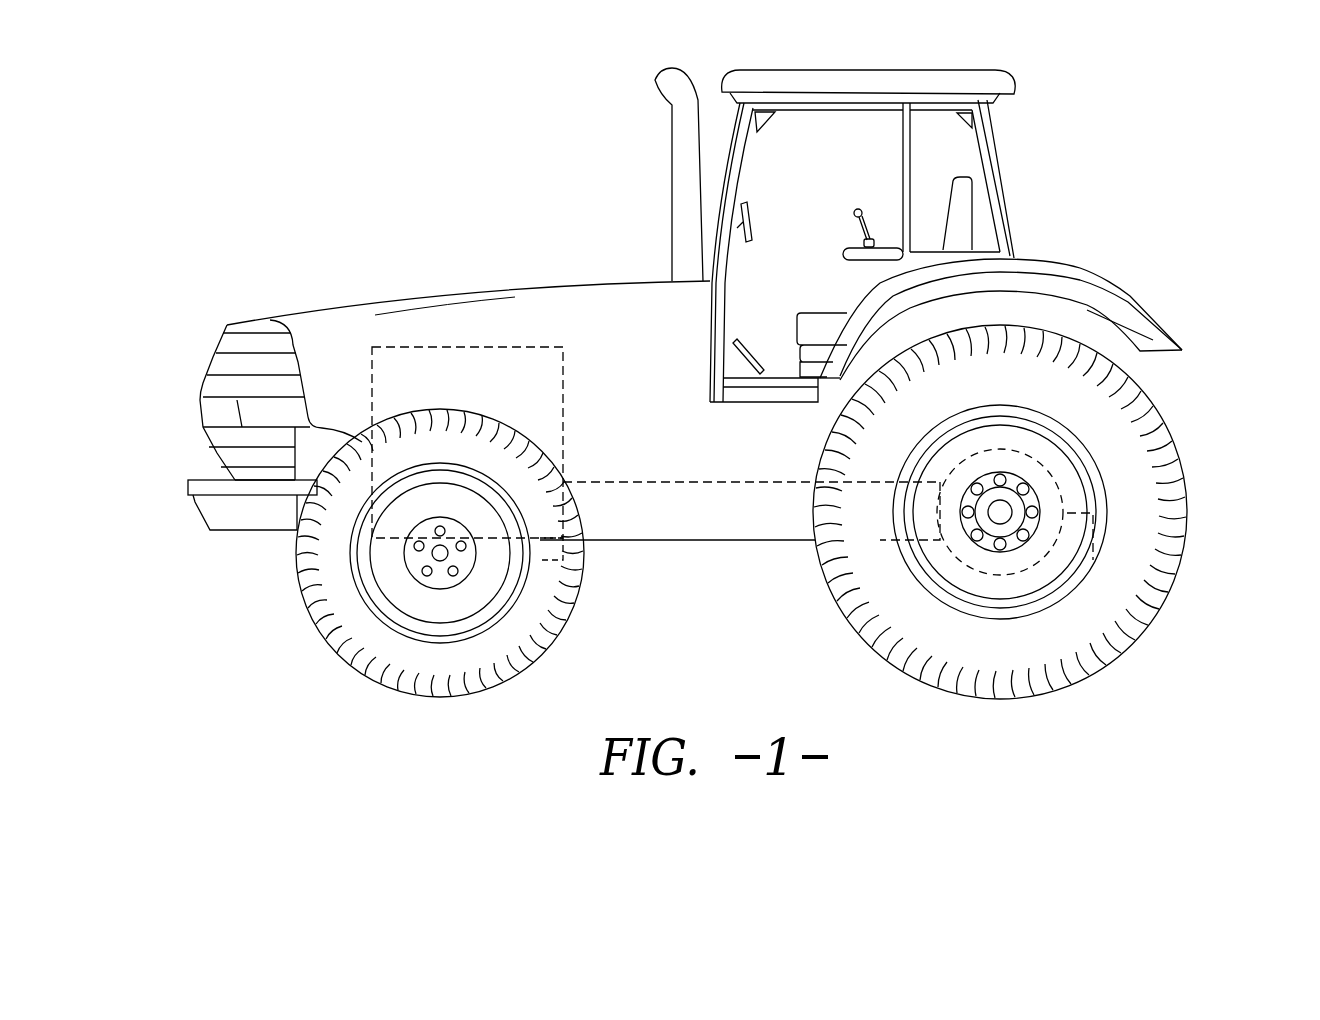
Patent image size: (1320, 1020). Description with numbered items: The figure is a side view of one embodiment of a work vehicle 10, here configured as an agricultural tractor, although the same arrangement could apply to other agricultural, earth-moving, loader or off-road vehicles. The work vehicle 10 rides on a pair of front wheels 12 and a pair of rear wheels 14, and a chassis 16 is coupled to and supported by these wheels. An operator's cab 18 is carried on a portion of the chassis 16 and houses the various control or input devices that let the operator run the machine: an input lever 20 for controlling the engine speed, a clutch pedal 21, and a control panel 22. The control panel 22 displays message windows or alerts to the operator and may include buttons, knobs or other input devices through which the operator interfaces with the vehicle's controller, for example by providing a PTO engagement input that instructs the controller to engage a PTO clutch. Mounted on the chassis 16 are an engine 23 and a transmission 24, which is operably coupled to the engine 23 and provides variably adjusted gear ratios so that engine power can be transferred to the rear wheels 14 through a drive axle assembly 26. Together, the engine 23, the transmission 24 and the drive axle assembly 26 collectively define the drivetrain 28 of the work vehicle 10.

The work vehicle 10 is at (374, 192).
The front wheels 12 is at (297, 572).
The rear wheels 14 is at (1190, 545).
The chassis 16 is at (648, 543).
The operator's cab 18 is at (1008, 188).
The input lever 20 is at (855, 212).
The clutch pedal 21 is at (763, 357).
The control panel 22 is at (752, 215).
The engine 23 is at (448, 347).
The transmission 24 is at (707, 478).
The drive axle assembly 26 is at (1107, 515).
The drivetrain 28 is at (615, 310).